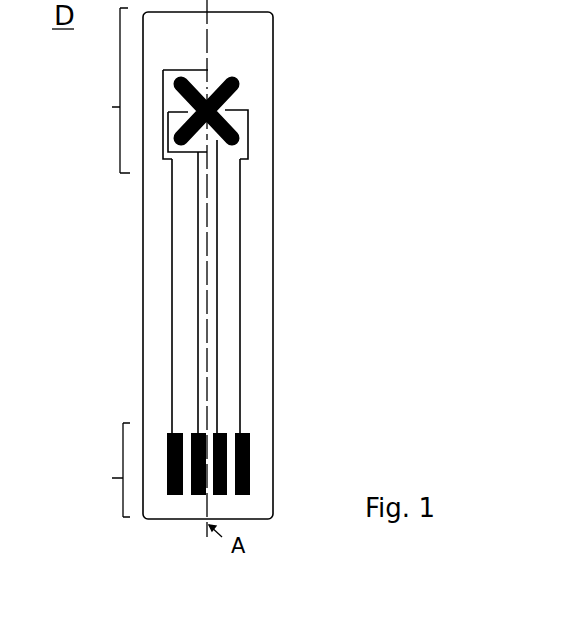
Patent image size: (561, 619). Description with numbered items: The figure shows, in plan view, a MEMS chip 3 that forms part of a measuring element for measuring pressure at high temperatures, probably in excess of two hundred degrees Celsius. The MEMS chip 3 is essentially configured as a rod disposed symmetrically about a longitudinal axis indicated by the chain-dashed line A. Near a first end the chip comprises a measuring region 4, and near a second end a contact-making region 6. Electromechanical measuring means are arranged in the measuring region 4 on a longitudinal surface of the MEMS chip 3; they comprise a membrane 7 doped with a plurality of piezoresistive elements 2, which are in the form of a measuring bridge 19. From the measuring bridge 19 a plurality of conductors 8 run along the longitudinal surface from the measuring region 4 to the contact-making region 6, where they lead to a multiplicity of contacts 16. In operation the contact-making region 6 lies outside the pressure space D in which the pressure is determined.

The piezoresistive elements 2 is at (243, 132).
The MEMS chip 3 is at (322, 240).
The measuring region 4 is at (144, 90).
The contact-making region 6 is at (201, 470).
The membrane 7 is at (237, 88).
The conductors 8 is at (243, 372).
The contacts 16 is at (250, 462).
The measuring bridge 19 is at (240, 74).